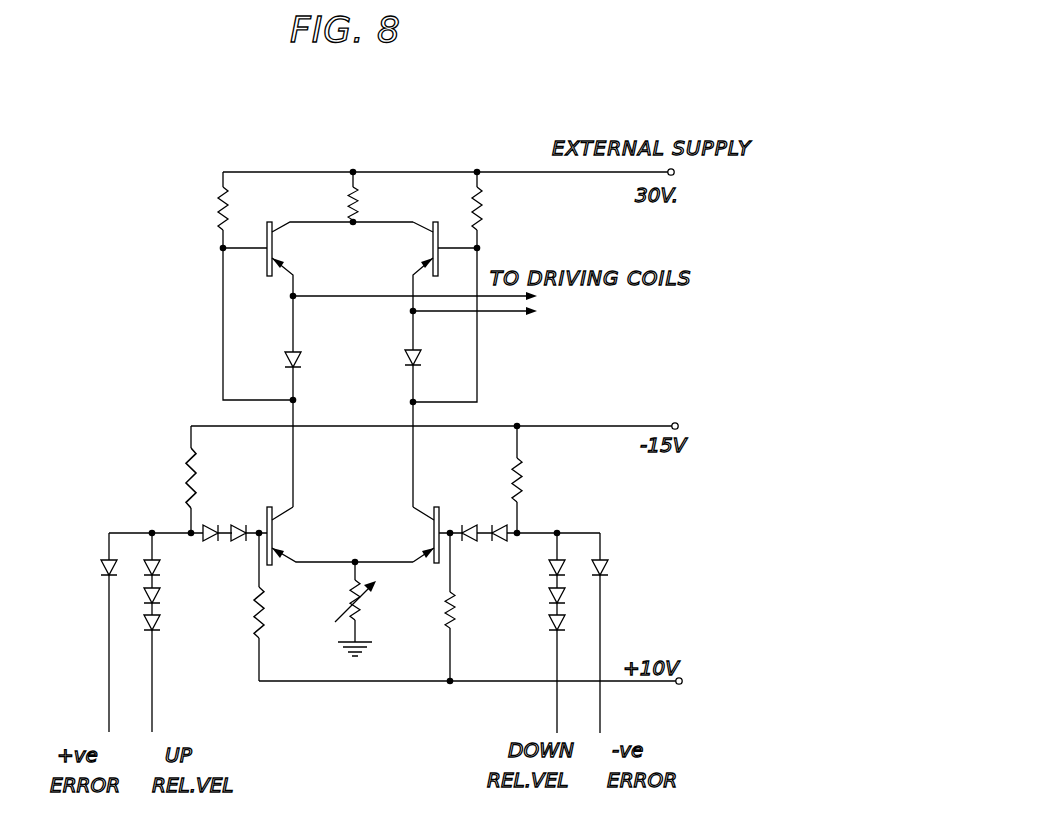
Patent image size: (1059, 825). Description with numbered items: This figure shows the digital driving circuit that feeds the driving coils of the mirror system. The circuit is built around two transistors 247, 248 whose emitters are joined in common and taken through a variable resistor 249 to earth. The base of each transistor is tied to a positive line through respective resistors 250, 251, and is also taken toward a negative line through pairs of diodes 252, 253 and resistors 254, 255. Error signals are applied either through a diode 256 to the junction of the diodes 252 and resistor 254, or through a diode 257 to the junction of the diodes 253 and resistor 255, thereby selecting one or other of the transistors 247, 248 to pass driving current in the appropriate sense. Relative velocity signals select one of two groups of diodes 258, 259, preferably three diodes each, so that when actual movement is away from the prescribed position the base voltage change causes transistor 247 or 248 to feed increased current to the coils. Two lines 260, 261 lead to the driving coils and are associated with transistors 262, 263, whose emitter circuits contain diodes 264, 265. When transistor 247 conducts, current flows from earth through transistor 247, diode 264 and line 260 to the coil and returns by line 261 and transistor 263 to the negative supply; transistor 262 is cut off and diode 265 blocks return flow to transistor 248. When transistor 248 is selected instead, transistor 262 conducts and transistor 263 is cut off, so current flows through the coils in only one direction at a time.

The transistor 247 is at (275, 528).
The transistor 248 is at (432, 531).
The variable resistor 249 is at (345, 592).
The resistor 250 is at (255, 632).
The resistor 251 is at (445, 612).
The pair of diodes 252 is at (221, 525).
The pair of diodes 253 is at (479, 526).
The resistor 254 is at (188, 464).
The resistor 255 is at (521, 479).
The diode 256 is at (100, 569).
The diode 257 is at (606, 569).
The group of diodes 258 is at (157, 603).
The group of diodes 259 is at (550, 610).
The line 260 is at (477, 299).
The line 261 is at (496, 316).
The transistor 262 is at (318, 259).
The transistor 263 is at (431, 251).
The diode 264 is at (299, 357).
The diode 265 is at (420, 369).